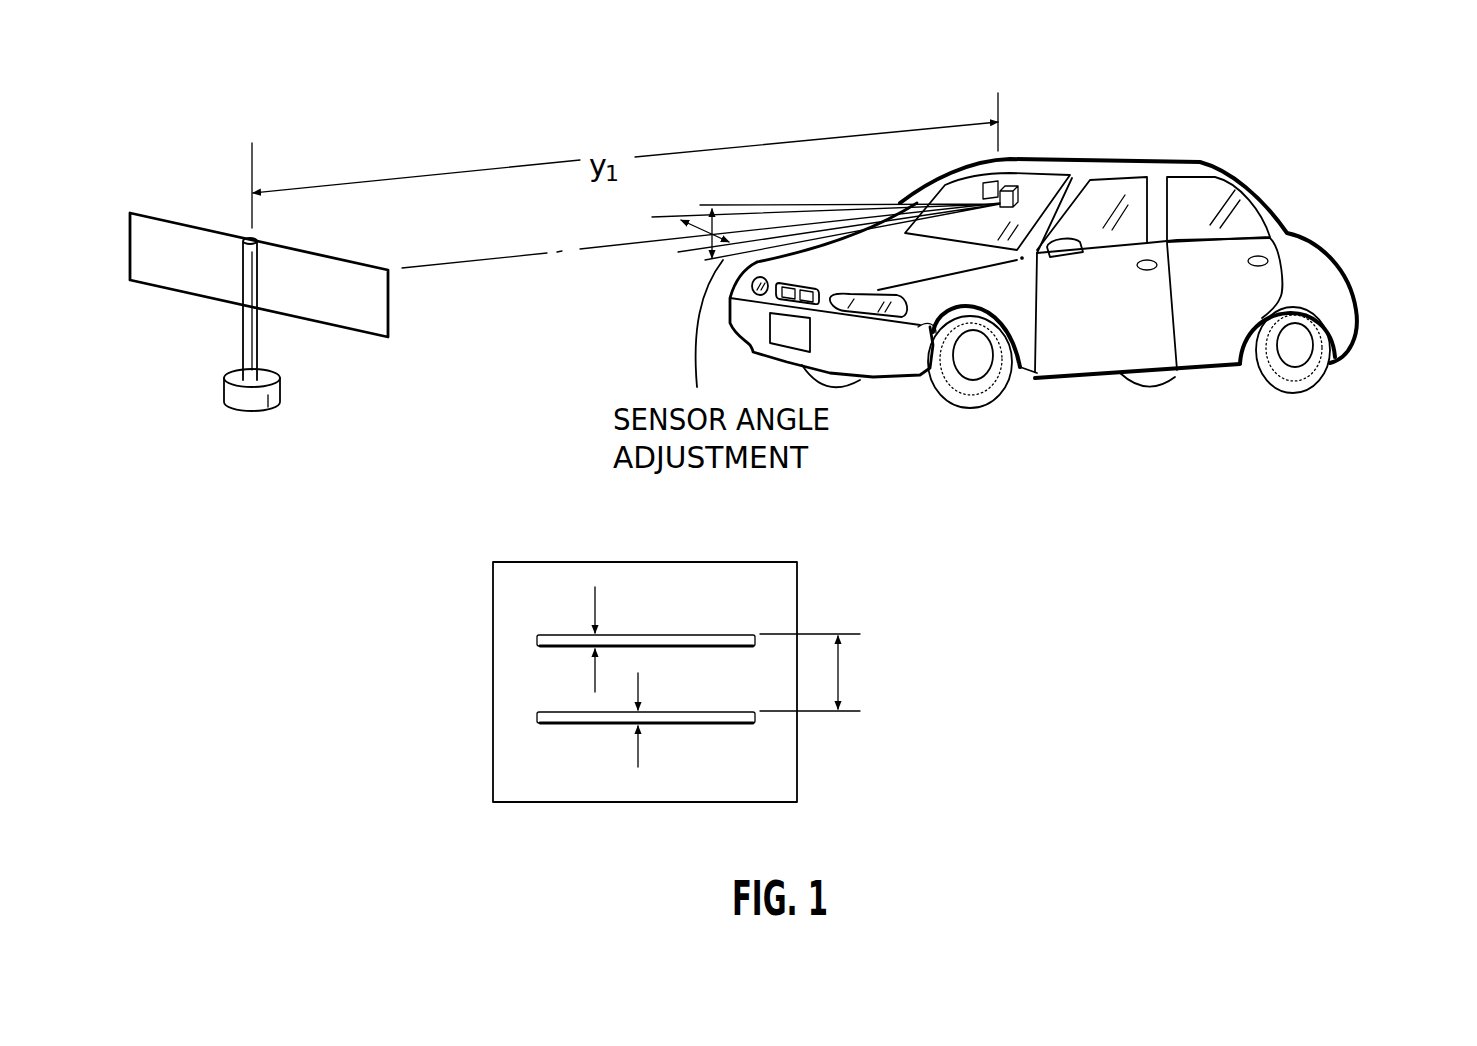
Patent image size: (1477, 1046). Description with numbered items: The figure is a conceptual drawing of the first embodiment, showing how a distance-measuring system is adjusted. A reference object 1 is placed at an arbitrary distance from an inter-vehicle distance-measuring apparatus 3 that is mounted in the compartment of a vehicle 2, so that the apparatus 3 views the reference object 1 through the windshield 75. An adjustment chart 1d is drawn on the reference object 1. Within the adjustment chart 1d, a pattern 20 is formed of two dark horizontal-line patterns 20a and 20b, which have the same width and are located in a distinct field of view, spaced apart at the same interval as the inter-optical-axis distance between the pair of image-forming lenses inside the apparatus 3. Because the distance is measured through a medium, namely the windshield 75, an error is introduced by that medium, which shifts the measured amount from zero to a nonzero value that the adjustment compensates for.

The reference object 1 is at (169, 233).
The adjustment chart 1d is at (405, 337).
The vehicle 2 is at (1093, 241).
The inter-vehicle distance-measuring apparatus 3 is at (1023, 200).
The windshield 75 is at (970, 192).
The pattern 20 is at (408, 610).
The dark horizontal-line pattern 20a is at (537, 637).
The dark horizontal-line pattern 20b is at (537, 712).